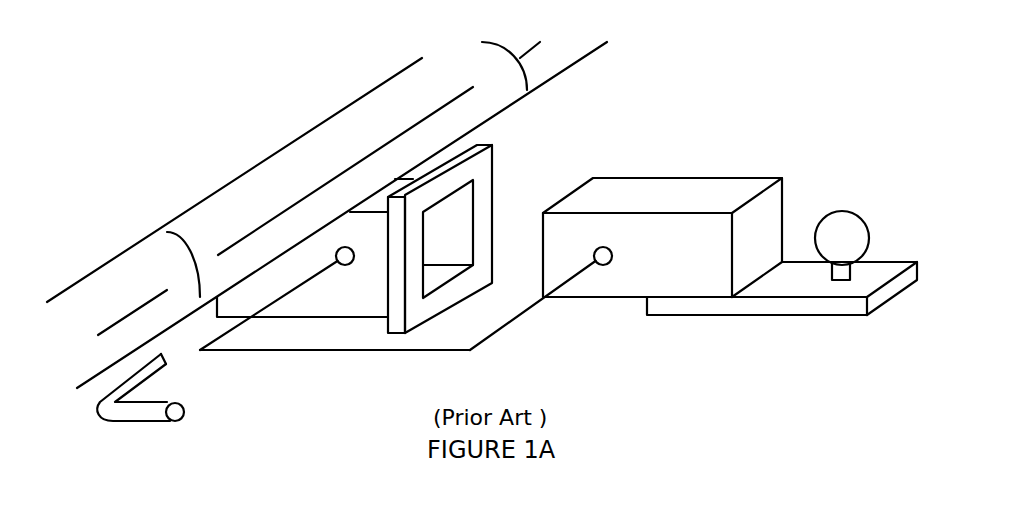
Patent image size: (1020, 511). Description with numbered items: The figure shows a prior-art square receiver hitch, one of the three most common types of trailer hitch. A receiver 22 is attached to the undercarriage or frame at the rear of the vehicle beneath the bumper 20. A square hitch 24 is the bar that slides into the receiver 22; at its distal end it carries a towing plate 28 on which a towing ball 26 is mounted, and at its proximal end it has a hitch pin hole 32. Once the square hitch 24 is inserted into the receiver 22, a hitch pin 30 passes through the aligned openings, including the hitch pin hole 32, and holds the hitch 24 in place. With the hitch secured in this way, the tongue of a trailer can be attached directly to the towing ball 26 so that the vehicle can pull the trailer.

The bumper 20 is at (250, 215).
The receiver 22 is at (473, 162).
The square hitch 24 is at (713, 193).
The towing ball 26 is at (850, 211).
The towing plate 28 is at (798, 280).
The hitch pin 30 is at (185, 419).
The hitch pin hole 32 is at (470, 350).